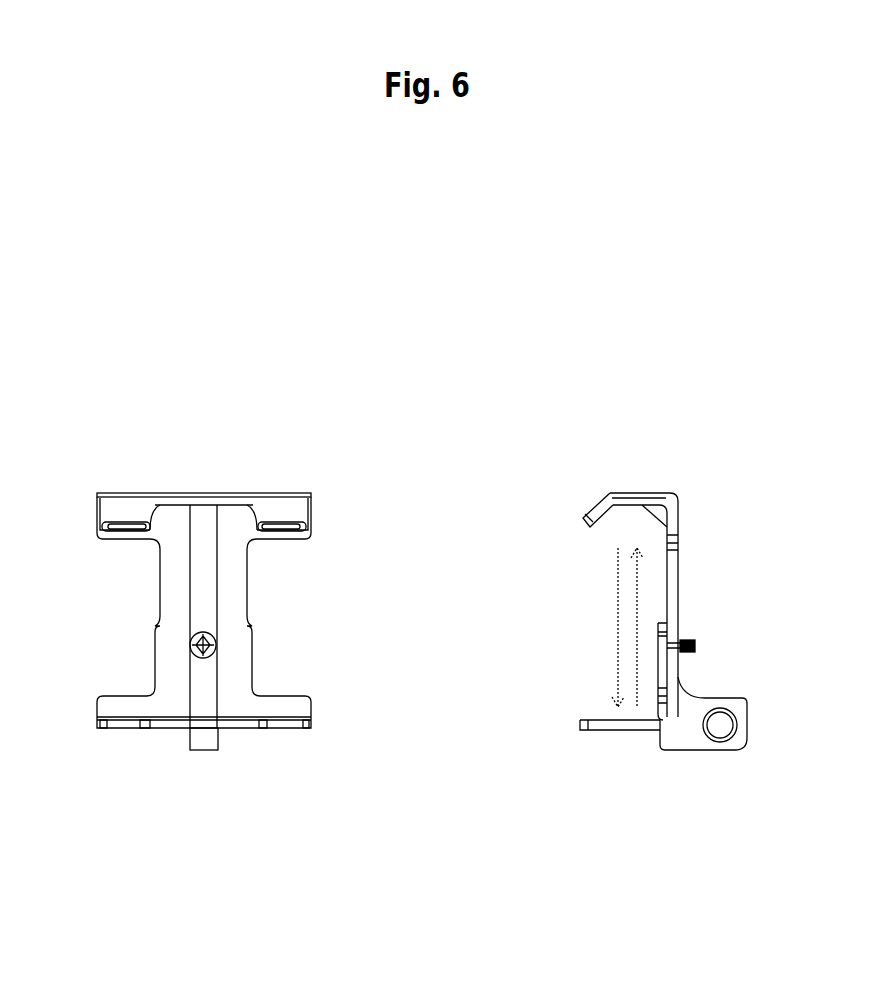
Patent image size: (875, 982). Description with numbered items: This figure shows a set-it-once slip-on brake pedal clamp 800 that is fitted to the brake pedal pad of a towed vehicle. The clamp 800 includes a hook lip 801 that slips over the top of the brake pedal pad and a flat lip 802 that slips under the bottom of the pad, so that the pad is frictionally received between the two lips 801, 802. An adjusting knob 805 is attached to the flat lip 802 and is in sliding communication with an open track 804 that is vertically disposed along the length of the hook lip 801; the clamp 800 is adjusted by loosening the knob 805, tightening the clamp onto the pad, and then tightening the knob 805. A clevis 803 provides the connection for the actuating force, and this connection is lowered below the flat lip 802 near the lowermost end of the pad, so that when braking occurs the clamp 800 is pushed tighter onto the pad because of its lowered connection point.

The brake pedal clamp 800 is at (297, 480).
The hook lip 801 is at (196, 488).
The flat lip 802 is at (239, 762).
The clevis 803 is at (743, 748).
The open track 804 is at (204, 582).
The adjusting knob 805 is at (696, 642).